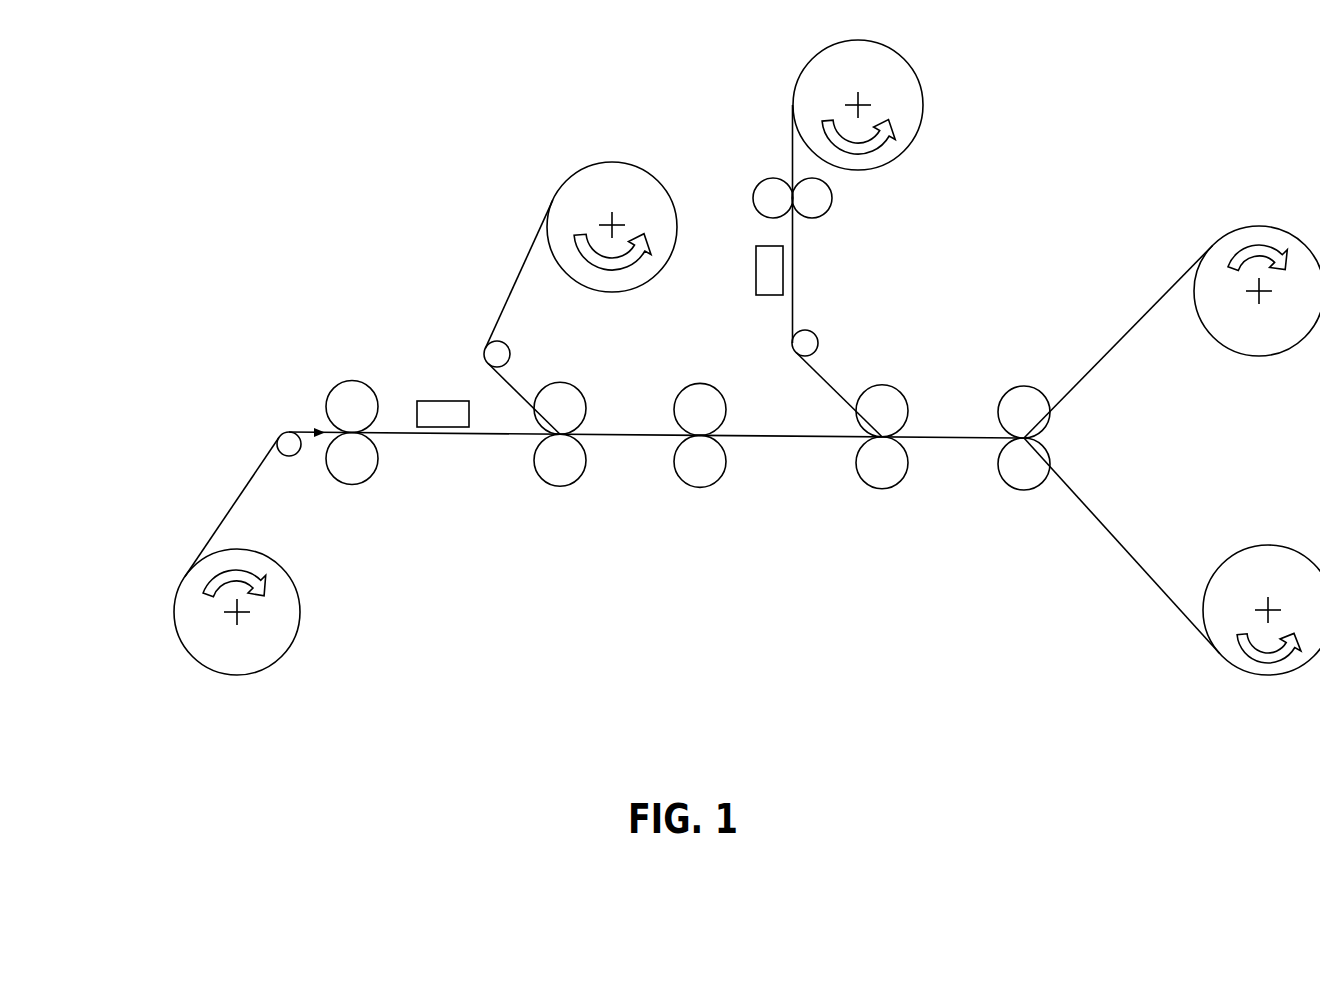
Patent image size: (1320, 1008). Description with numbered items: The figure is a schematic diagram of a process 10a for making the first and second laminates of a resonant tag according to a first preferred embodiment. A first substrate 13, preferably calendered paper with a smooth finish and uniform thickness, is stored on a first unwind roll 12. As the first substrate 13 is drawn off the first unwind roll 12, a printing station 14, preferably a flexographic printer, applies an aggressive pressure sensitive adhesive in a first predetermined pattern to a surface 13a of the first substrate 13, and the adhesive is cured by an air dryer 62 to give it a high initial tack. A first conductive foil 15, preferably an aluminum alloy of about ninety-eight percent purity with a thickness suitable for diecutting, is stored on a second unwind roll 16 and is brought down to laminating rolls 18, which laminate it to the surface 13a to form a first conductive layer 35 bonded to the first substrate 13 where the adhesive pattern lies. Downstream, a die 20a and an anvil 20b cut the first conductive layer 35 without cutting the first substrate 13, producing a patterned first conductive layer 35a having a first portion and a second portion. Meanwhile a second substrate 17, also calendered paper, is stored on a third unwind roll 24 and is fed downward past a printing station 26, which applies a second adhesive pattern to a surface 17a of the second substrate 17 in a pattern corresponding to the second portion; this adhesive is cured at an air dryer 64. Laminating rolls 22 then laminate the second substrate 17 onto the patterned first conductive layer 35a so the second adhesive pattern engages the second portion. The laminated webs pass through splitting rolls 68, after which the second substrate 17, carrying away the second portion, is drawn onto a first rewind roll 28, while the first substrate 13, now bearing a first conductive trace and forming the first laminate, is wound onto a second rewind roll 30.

The process 10a is at (262, 191).
The first unwind roll 12 is at (302, 640).
The first substrate 13 is at (242, 497).
The surface of first substrate 13a is at (260, 467).
The printing station 14 is at (330, 400).
The first conductive foil 15 is at (510, 303).
The second unwind roll 16 is at (565, 183).
The second substrate 17 is at (792, 305).
The surface of second substrate 17a is at (788, 157).
The laminating rolls 18 is at (560, 487).
The die 20a is at (690, 385).
The anvil 20b is at (700, 488).
The laminating rolls 22 is at (882, 462).
The third unwind roll 24 is at (812, 57).
The printing station 26 is at (832, 198).
The first rewind roll 28 is at (1212, 338).
The second rewind roll 30 is at (1228, 663).
The first conductive layer 35 is at (645, 435).
The patterned first conductive layer 35a is at (808, 437).
The air dryer 62 is at (450, 400).
The air dryer 64 is at (755, 269).
The splitting rolls 68 is at (1024, 490).